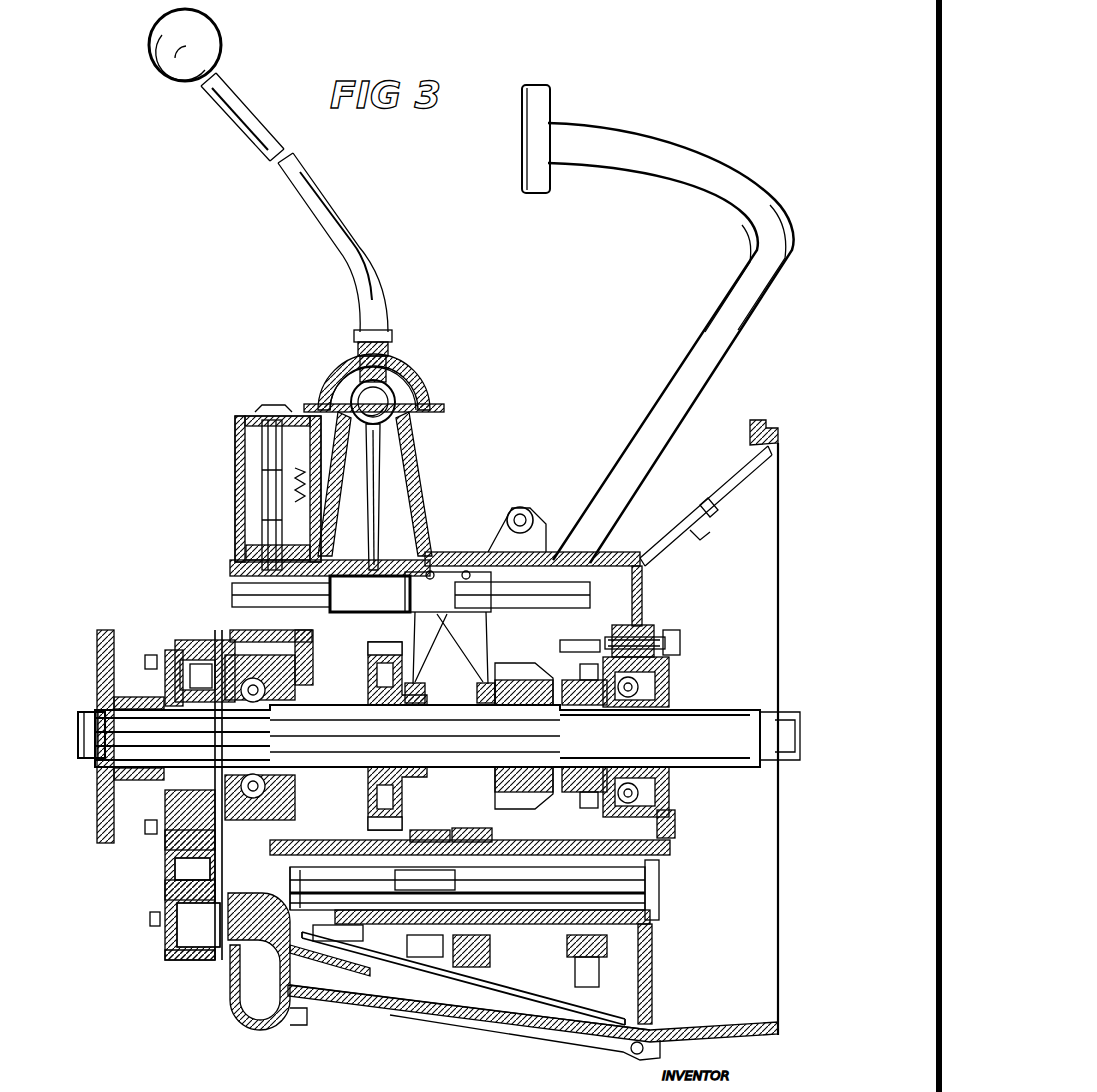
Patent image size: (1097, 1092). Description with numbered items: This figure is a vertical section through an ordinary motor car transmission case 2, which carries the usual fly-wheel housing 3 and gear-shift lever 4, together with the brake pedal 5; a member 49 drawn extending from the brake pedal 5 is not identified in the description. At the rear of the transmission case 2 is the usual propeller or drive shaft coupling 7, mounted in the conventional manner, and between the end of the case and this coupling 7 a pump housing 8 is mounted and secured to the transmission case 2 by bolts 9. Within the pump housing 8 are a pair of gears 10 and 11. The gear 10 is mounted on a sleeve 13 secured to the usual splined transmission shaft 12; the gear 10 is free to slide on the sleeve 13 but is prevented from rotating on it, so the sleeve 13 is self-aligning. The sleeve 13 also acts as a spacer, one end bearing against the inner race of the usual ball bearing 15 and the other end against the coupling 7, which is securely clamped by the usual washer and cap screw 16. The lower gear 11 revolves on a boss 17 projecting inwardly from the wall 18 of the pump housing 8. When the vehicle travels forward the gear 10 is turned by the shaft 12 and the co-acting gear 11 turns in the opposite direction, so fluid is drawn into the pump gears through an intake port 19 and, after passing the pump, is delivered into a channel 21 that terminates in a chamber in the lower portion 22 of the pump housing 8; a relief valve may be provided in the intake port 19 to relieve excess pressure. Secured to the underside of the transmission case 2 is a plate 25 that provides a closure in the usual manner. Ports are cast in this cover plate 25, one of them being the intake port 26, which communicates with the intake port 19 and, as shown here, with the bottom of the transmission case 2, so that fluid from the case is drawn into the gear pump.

The transmission case 2 is at (726, 1008).
The fly-wheel housing 3 is at (752, 448).
The gear-shift lever 4 is at (340, 224).
The brake pedal 5 is at (532, 193).
The propeller shaft coupling 7 is at (98, 668).
The pump housing 8 is at (186, 655).
The bolts 9 is at (150, 655).
The gear 10 is at (190, 670).
The lower gear 11 is at (212, 868).
The splined transmission shaft 12 is at (335, 722).
The sleeve 13 is at (250, 690).
The ball bearing 15 is at (268, 796).
The washer and cap screw 16 is at (78, 752).
The boss 17 is at (175, 846).
The wall 18 is at (170, 884).
The intake port 19 is at (262, 990).
The channel 21 is at (165, 952).
The lower portion 22 is at (192, 925).
The plate 25 is at (440, 1012).
The intake port 26 is at (463, 978).
The pedal lever 49 is at (742, 300).